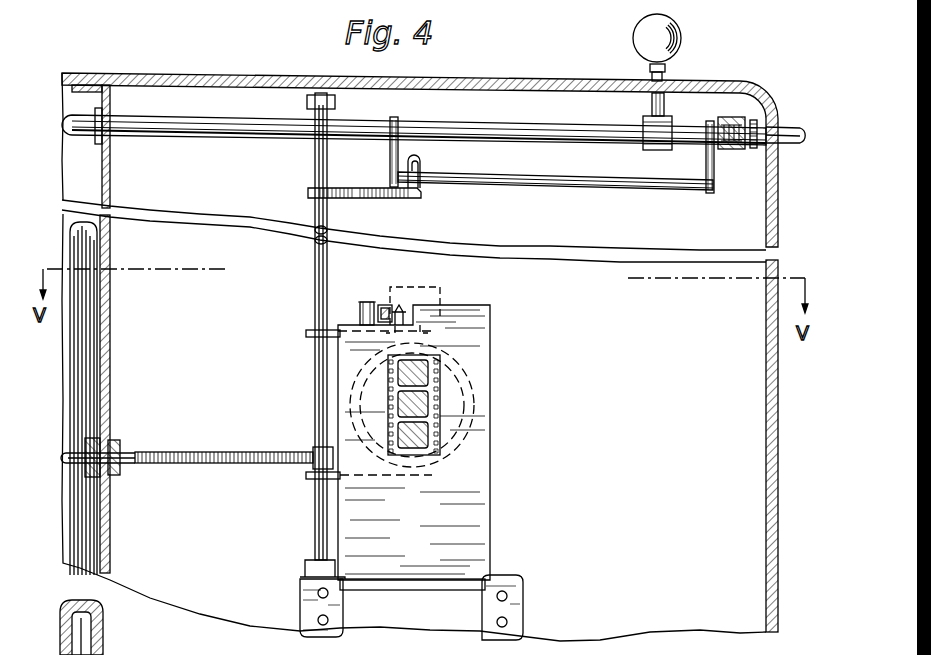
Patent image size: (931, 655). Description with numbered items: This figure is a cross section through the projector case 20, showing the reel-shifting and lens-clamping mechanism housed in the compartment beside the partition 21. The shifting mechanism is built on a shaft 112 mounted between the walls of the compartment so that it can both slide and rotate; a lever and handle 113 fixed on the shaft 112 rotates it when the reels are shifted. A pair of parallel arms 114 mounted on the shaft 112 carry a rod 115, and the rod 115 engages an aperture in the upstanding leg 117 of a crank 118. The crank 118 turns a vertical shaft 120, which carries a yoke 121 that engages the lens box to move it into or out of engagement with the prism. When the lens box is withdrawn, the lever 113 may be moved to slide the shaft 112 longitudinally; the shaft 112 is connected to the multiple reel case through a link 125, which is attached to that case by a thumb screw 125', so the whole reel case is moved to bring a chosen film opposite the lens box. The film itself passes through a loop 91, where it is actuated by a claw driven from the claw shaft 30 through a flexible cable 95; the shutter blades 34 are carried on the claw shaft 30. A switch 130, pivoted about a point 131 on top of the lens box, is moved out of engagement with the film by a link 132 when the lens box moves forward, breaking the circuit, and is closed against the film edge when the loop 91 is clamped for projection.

The case 20 is at (210, 75).
The partition 21 is at (110, 352).
The claw shaft 30 is at (68, 455).
The shutter blades 34 is at (78, 502).
The film loop 91 is at (440, 375).
The flexible cable 95 is at (198, 452).
The shaft 112 is at (505, 128).
The lever and handle 113 is at (640, 40).
The parallel arms 114 is at (390, 152).
The rod 115 is at (552, 186).
The upstanding leg 117 is at (421, 166).
The crank 118 is at (362, 198).
The vertical shaft 120 is at (313, 257).
The yoke 121 is at (318, 322).
The link 125 is at (747, 105).
The thumb screw 125' is at (786, 116).
The switch 130 is at (380, 305).
The pivot point 131 is at (367, 300).
The link 132 is at (414, 315).